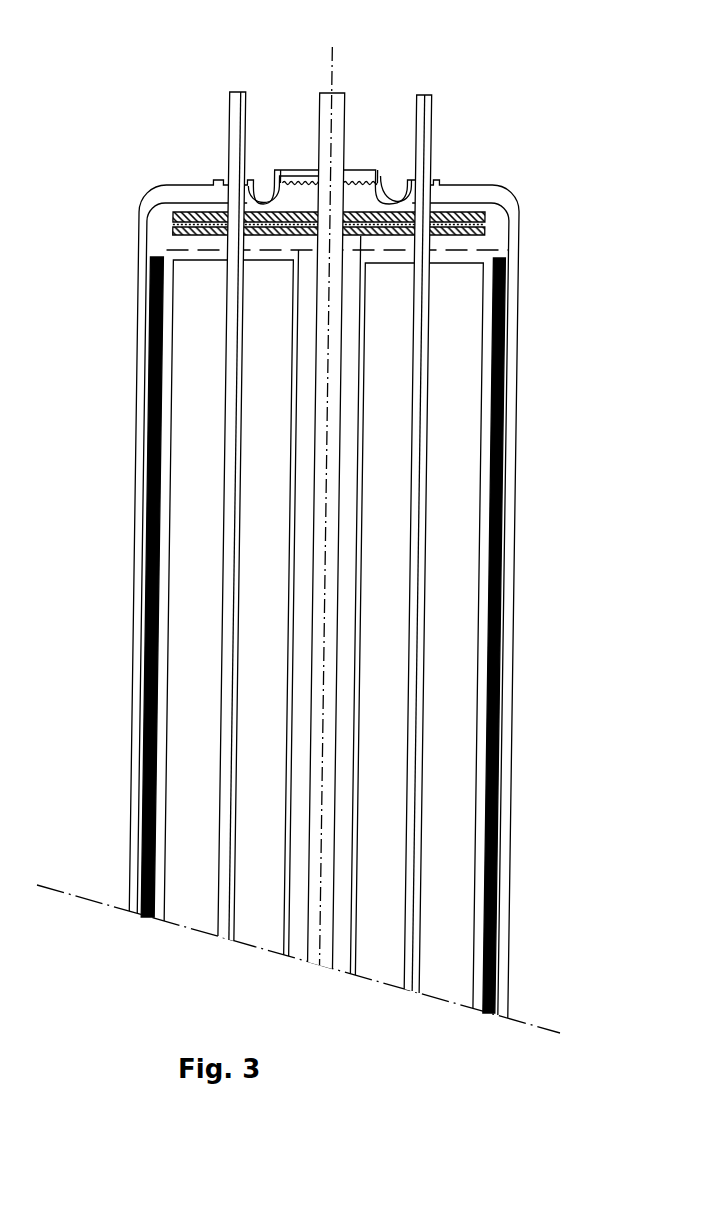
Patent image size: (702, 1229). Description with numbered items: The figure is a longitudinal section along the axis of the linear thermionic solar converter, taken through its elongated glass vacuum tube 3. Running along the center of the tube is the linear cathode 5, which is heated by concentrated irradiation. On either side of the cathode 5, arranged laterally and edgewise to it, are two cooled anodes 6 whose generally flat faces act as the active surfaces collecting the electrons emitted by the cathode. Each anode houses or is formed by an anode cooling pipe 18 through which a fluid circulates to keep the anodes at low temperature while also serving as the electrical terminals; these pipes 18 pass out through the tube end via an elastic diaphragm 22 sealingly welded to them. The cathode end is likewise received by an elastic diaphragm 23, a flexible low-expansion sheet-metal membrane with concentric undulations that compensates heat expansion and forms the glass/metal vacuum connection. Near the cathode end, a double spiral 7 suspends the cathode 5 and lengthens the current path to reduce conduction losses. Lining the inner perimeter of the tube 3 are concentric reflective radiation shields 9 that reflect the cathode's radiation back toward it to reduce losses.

The vacuum tube 3 is at (516, 272).
The linear cathode 5 is at (329, 483).
The cooled anodes 6 is at (198, 405).
The double spiral 7 is at (488, 232).
The reflective radiation shields 9 is at (510, 345).
The anode cooling pipes 18 is at (238, 105).
The elastic diaphragm for receiving the anode cooling pipe 22 is at (436, 185).
The elastic diaphragm for receiving the end of the cathode 23 is at (296, 187).